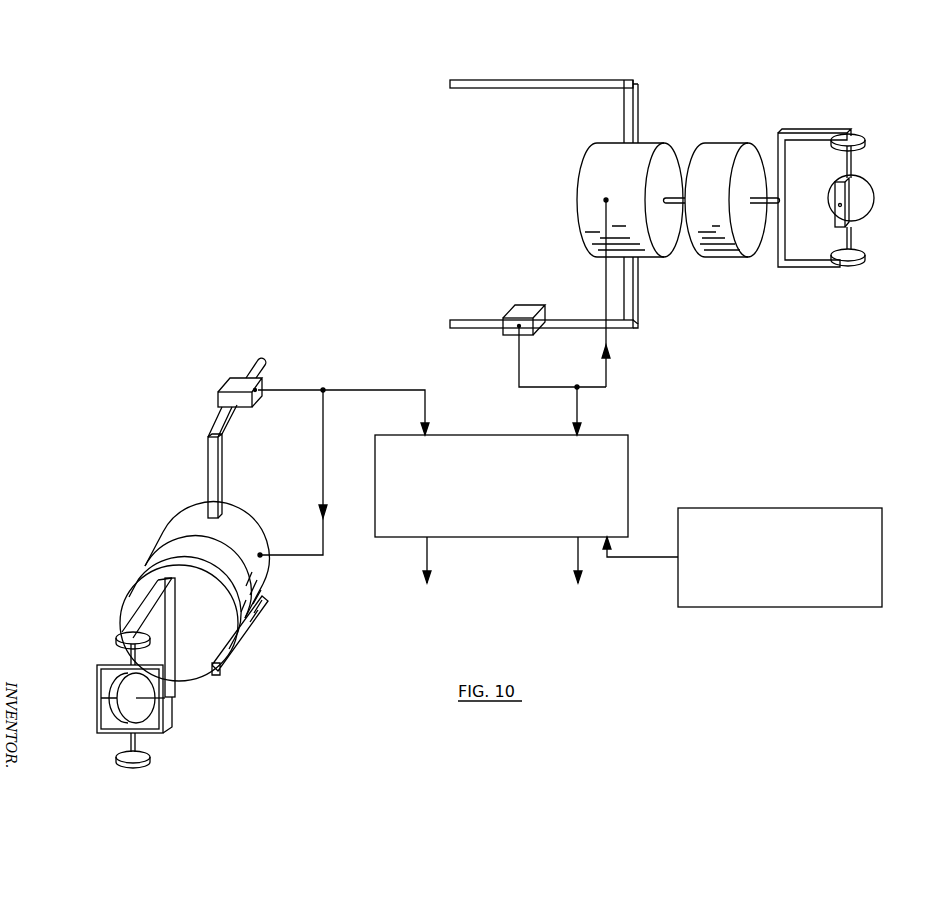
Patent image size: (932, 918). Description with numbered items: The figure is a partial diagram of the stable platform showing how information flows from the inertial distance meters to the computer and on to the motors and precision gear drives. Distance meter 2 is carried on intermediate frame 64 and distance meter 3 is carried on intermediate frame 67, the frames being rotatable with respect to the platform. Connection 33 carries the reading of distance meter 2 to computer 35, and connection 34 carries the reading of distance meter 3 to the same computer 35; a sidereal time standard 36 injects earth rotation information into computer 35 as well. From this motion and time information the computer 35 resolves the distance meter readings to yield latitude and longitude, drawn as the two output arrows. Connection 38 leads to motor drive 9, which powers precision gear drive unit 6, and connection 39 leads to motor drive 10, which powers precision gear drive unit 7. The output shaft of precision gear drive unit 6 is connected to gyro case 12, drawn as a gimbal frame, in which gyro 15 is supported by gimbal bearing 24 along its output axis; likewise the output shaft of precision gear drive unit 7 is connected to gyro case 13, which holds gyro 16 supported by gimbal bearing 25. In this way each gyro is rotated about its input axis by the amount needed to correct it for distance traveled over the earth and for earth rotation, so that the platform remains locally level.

The distance meter 2 is at (518, 308).
The distance meter 3 is at (237, 378).
The precision gear drive unit 6 is at (715, 257).
The precision gear drive unit 7 is at (143, 568).
The motor drive 9 is at (581, 184).
The motor drive 10 is at (190, 517).
The gyro case 12 is at (801, 132).
The gyro case 13 is at (145, 610).
The gyro 15 is at (868, 197).
The gyro 16 is at (122, 720).
The gimbal bearing 24 is at (855, 135).
The gimbal bearing 25 is at (120, 632).
The connection 33 is at (545, 387).
The connection 34 is at (337, 389).
The computer 35 is at (475, 434).
The sidereal time standard 36 is at (771, 513).
The connection 38 is at (607, 369).
The connection 39 is at (311, 558).
The intermediate frame 64 is at (565, 78).
The intermediate frame 67 is at (214, 430).